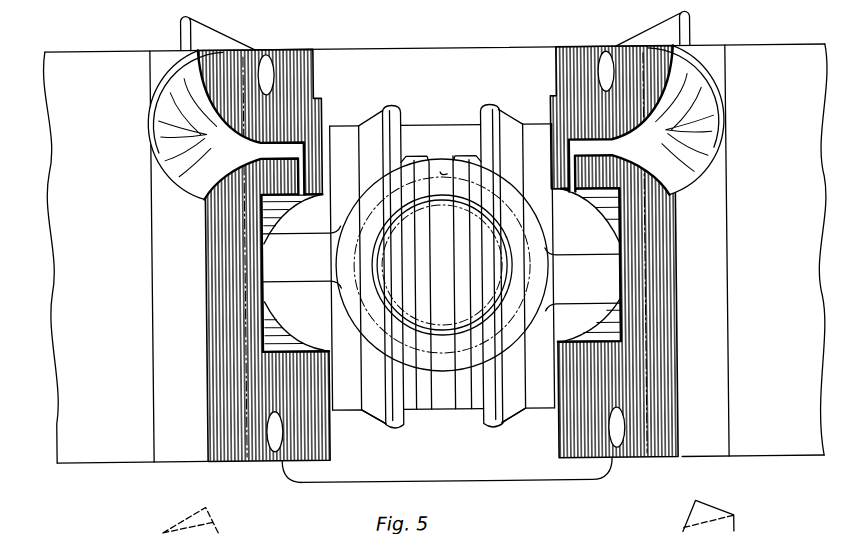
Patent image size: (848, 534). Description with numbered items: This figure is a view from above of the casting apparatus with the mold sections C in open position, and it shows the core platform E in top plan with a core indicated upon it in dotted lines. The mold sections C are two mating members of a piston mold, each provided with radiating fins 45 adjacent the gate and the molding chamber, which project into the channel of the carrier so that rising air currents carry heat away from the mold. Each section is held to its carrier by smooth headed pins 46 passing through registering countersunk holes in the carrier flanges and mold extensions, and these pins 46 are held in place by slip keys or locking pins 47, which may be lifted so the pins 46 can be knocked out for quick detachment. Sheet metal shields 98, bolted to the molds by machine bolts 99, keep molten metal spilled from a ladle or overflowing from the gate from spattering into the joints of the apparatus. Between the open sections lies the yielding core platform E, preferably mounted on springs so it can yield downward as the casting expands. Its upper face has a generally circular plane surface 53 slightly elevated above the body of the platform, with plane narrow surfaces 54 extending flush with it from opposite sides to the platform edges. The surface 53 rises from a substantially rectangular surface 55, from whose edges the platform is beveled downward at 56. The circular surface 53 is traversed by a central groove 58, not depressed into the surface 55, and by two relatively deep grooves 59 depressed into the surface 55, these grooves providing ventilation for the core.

The radiating fins 45 is at (693, 31).
The pins 46 is at (269, 80).
The locking pins 47 is at (672, 130).
The circular plane surface 53 is at (417, 172).
The plane narrow surfaces 54 is at (441, 268).
The rectangular surface 55 is at (445, 397).
The beveled portion 56 is at (348, 469).
The central groove 58 is at (441, 168).
The deep grooves 59 is at (380, 118).
The sheet metal shields 98 is at (100, 454).
The machine bolts 99 is at (728, 517).
The mold sections C is at (183, 454).
The core platform E is at (543, 466).